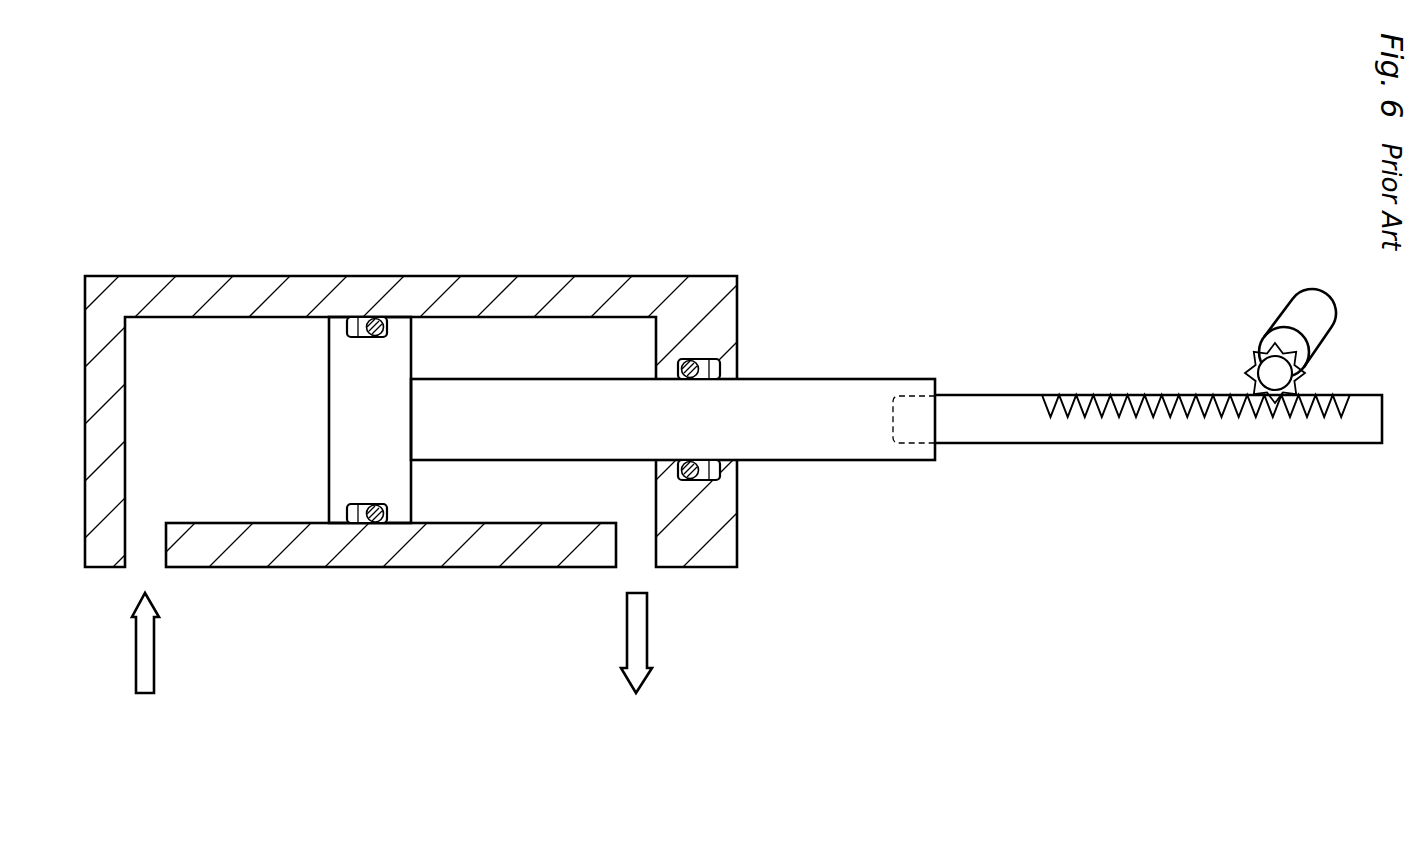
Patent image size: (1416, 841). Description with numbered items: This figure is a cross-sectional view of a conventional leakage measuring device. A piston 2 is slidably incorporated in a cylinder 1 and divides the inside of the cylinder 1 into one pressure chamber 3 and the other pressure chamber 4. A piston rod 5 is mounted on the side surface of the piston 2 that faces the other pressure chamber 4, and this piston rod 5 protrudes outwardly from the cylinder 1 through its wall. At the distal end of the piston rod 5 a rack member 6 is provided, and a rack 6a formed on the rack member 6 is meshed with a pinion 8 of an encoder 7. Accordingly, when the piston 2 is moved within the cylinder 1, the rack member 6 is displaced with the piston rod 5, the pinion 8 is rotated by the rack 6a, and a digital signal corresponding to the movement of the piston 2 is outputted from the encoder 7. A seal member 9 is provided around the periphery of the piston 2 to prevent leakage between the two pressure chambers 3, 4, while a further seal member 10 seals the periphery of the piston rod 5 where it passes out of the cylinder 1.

The cylinder 1 is at (210, 268).
The piston 2 is at (400, 327).
The one pressure chamber 3 is at (285, 505).
The other pressure chamber 4 is at (503, 505).
The piston rod 5 is at (774, 393).
The rack member 6 is at (1158, 414).
The rack 6a is at (1123, 397).
The encoder 7 is at (1307, 302).
The pinion 8 is at (1253, 367).
The seal member 9 is at (384, 523).
The seal member 10 is at (690, 360).